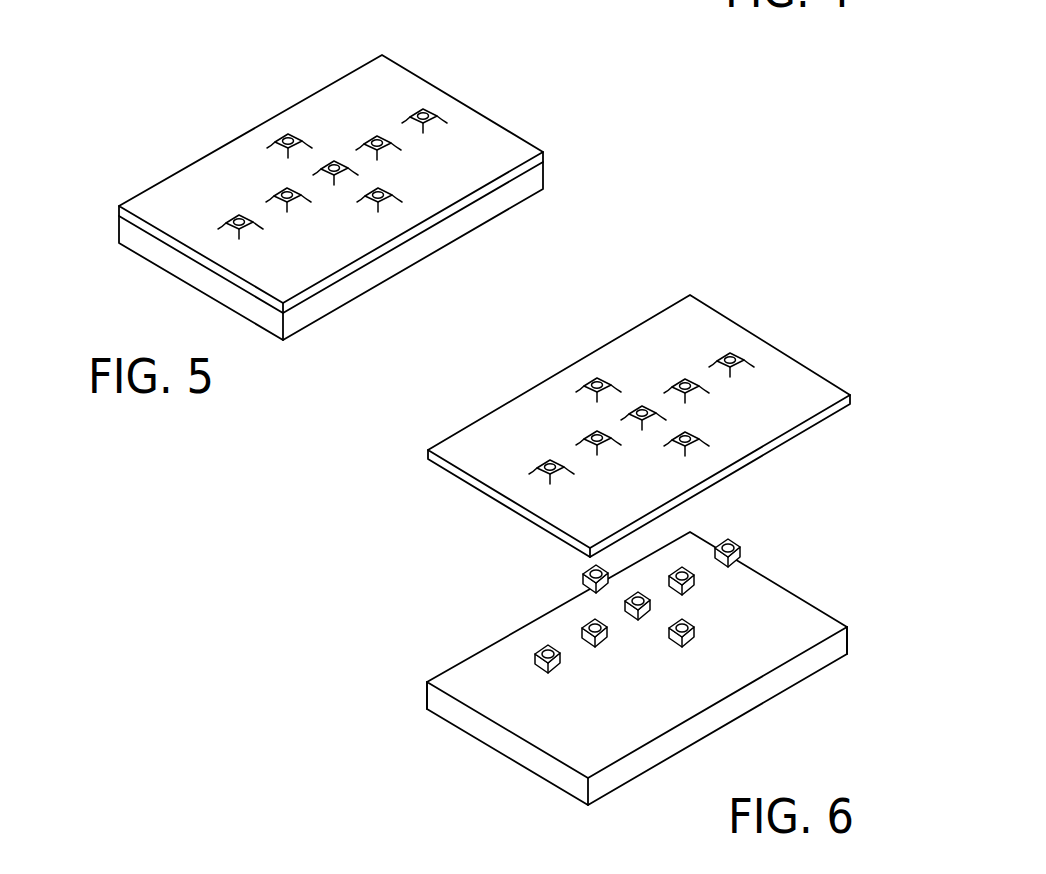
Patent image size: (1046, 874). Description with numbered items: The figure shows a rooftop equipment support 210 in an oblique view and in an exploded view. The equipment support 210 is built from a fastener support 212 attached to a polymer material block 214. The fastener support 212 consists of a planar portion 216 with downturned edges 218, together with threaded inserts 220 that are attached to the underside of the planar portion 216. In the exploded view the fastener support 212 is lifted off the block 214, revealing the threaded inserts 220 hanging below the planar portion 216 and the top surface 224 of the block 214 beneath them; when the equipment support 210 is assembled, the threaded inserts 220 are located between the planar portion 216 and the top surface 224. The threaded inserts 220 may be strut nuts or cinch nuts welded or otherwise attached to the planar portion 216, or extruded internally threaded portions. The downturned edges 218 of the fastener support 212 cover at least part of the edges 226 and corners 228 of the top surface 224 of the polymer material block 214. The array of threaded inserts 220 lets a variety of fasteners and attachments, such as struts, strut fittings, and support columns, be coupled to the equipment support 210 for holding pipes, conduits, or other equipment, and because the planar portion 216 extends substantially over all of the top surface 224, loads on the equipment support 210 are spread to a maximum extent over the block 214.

In FIG. 5, the equipment support 210 is at (158, 143).
In FIG. 6, the equipment support 210 is at (416, 433).
In FIG. 5, the fastener support 212 is at (261, 110).
In FIG. 6, the fastener support 212 is at (415, 448).
In FIG. 5, the polymer material block 214 is at (108, 245).
In FIG. 6, the polymer material block 214 is at (463, 733).
In FIG. 5, the planar portion 216 is at (392, 77).
In FIG. 6, the planar portion 216 is at (695, 323).
In FIG. 5, the downturned edges 218 is at (217, 278).
In FIG. 6, the downturned edges 218 is at (475, 485).
In FIG. 6, the threaded inserts 220 is at (754, 551).
In FIG. 6, the top surface 224 is at (800, 617).
In FIG. 6, the edges 226 is at (527, 742).
In FIG. 6, the corners 228 is at (427, 682).